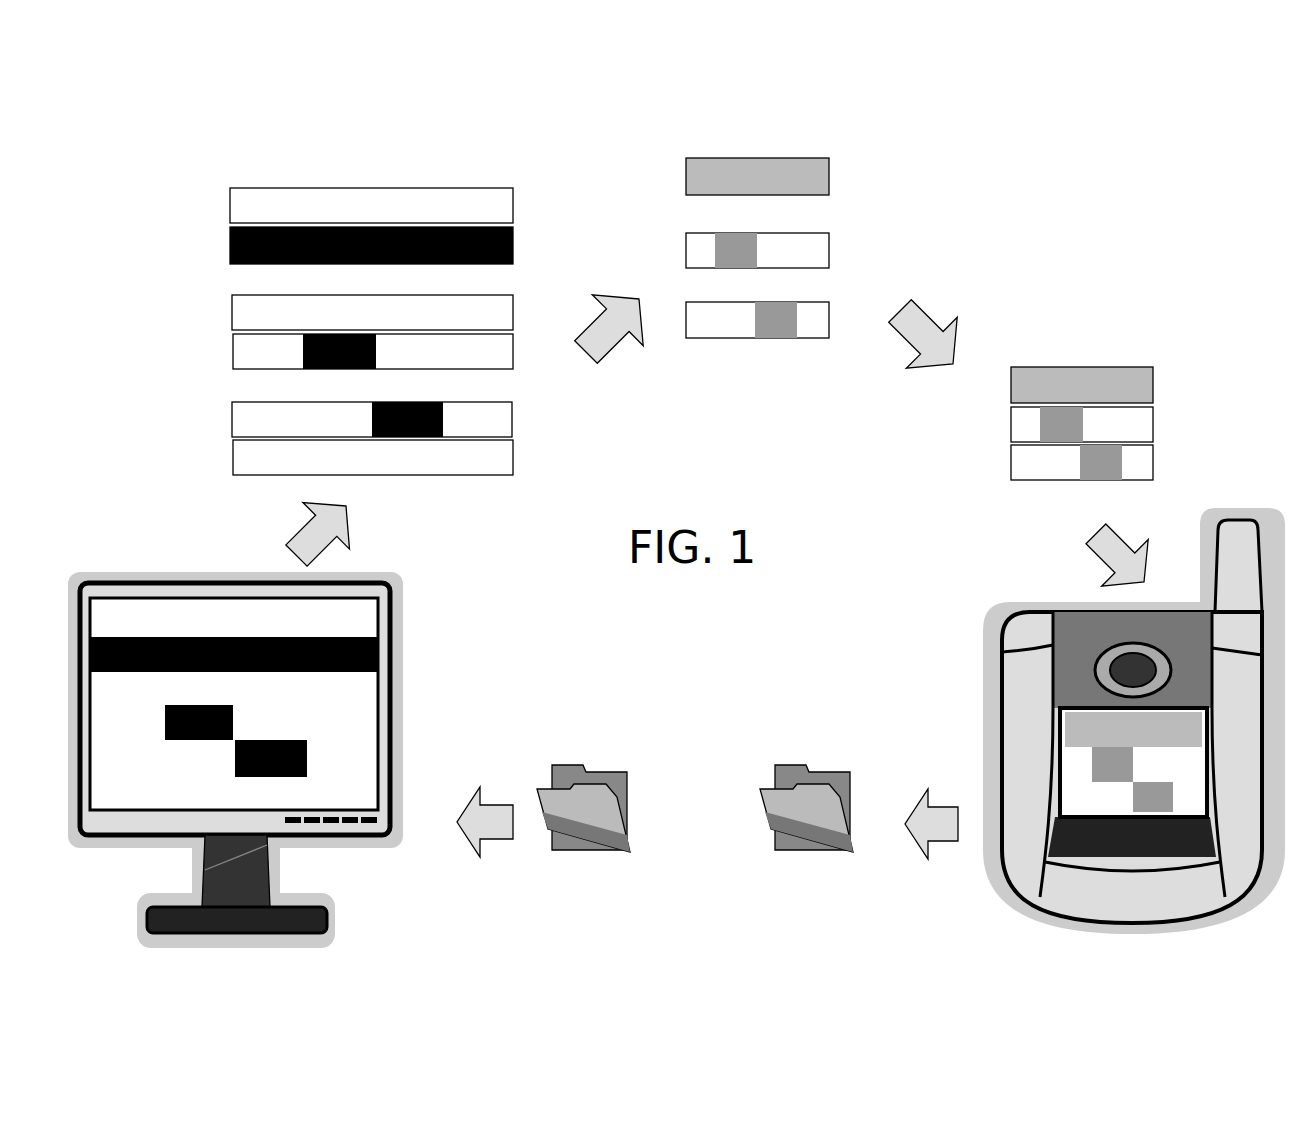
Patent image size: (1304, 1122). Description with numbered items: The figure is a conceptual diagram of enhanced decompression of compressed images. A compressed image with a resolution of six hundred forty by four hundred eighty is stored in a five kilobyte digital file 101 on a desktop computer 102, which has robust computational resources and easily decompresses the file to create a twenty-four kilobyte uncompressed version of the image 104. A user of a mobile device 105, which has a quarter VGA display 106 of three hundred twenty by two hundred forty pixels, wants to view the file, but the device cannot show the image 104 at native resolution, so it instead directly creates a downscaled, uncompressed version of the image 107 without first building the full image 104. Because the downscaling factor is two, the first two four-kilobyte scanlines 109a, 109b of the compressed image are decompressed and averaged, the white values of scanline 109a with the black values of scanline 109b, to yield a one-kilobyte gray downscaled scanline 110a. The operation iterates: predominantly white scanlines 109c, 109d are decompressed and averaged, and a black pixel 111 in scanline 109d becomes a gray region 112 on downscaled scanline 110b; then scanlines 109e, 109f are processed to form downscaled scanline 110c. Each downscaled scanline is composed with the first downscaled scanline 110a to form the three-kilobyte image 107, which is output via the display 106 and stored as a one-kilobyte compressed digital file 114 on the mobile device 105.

The digital file 101 is at (558, 766).
The desktop computer 102 is at (275, 738).
The uncompressed version of the image 104 is at (348, 705).
The mobile device 105 is at (1093, 721).
The display 106 is at (1054, 742).
The downscaled, uncompressed version of the image 107 is at (1088, 798).
The scanline 109a is at (230, 205).
The scanline 109b is at (230, 245).
The scanline 109c is at (232, 313).
The scanline 109d is at (315, 350).
The scanline 109e is at (232, 420).
The scanline 109f is at (233, 457).
The downscaled scanline 110a is at (686, 177).
The downscaled scanline 110b is at (686, 250).
The downscaled scanline 110c is at (829, 302).
The black pixel 111 is at (357, 362).
The gray region 112 is at (735, 268).
The digital file 114 is at (781, 766).